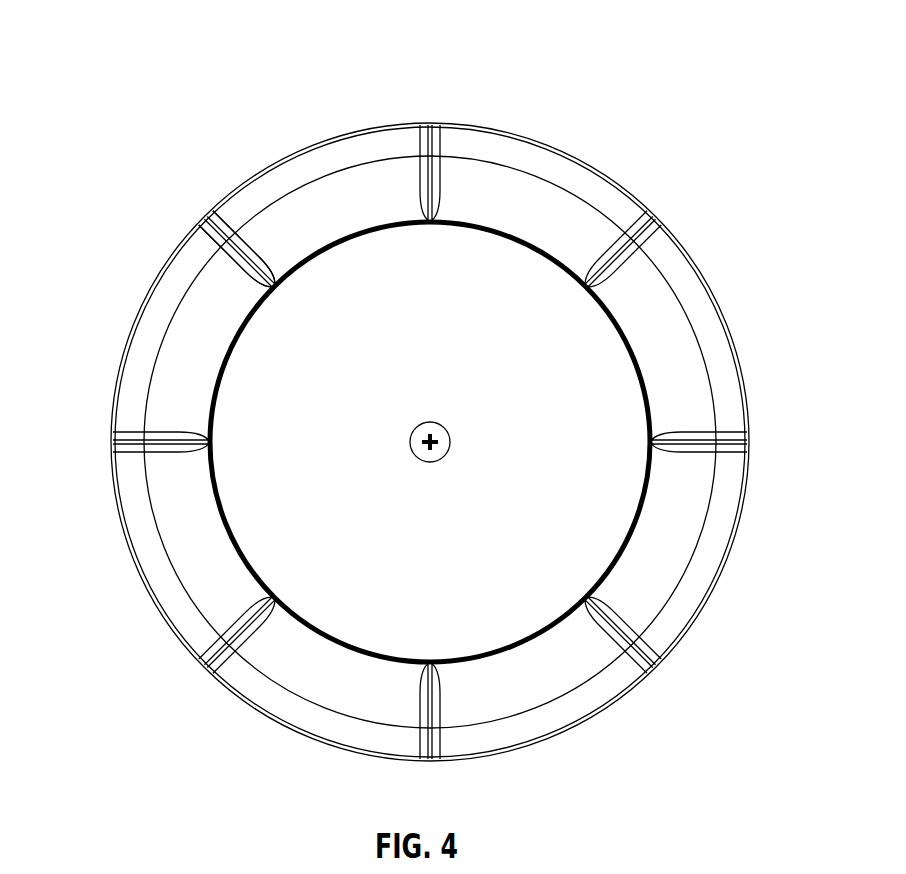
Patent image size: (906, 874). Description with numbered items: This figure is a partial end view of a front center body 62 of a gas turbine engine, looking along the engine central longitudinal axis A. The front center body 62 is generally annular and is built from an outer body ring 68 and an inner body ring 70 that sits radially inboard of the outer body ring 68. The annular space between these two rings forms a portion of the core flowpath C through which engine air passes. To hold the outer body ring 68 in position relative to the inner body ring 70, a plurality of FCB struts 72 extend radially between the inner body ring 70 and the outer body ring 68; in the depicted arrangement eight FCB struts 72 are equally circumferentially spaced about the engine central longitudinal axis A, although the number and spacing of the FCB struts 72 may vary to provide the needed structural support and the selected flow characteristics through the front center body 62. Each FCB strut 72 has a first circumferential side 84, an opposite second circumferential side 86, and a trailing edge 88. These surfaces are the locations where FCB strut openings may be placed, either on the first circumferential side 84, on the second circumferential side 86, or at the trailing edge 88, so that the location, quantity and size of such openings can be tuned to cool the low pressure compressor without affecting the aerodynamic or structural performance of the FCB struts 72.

The front center body 62 is at (104, 49).
The outer body ring 68 is at (592, 166).
The inner body ring 70 is at (670, 340).
The FCB struts 72 is at (435, 126).
The first circumferential side 84 is at (236, 253).
The second circumferential side 86 is at (243, 247).
The trailing edge 88 is at (270, 276).
The core flowpath C is at (512, 163).
The engine central longitudinal axis A is at (440, 426).